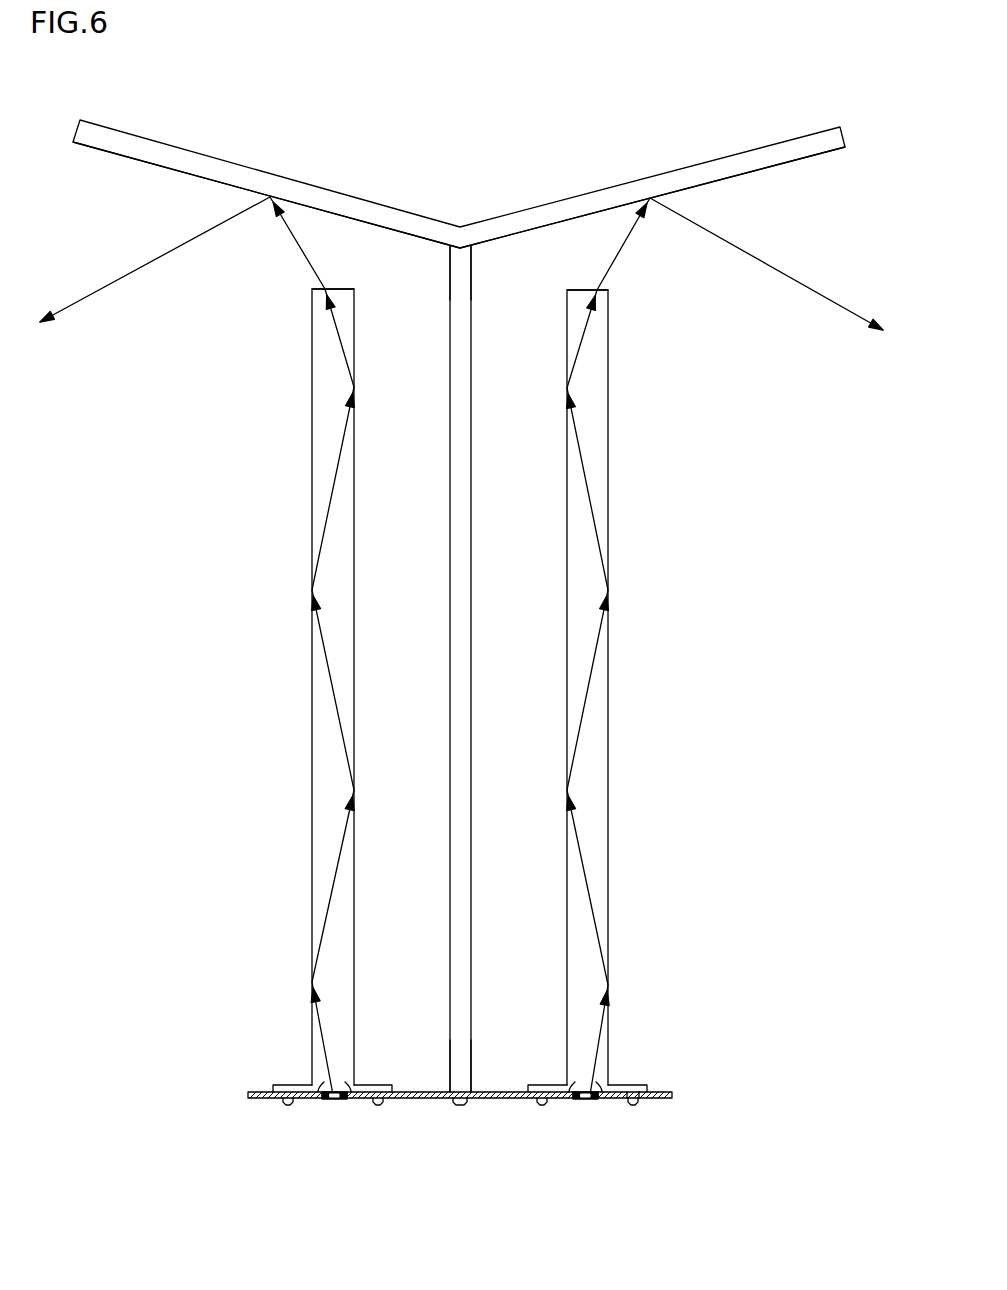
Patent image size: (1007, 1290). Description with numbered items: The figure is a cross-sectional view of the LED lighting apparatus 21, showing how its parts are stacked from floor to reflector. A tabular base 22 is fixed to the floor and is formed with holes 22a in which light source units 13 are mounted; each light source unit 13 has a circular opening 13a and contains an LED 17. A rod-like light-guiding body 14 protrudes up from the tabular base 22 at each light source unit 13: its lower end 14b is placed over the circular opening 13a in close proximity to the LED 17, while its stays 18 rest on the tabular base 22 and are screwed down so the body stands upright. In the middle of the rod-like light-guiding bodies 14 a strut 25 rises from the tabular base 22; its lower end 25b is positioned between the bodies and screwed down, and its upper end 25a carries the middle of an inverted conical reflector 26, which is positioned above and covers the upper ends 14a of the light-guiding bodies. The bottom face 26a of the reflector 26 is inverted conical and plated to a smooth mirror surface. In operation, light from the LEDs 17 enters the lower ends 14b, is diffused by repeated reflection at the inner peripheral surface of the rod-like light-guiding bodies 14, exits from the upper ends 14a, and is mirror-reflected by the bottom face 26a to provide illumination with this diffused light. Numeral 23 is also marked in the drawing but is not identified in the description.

The LED lighting apparatus 21 is at (378, 69).
The inverted conical reflector 26 is at (688, 165).
The bottom face 26a is at (736, 180).
The strut 25 is at (472, 606).
The upper end of the strut 25a is at (472, 285).
The lower end of the strut 25b is at (472, 1080).
The rod-like light-guiding body 14 is at (312, 507).
The upper end of the rod-like light-guiding body 14a is at (355, 283).
The lower end of the rod-like light-guiding body 14b is at (347, 1085).
The stay 18 is at (273, 1086).
The tabular base 22 is at (672, 1094).
The hole 22a is at (350, 1101).
The engaging hole 23 is at (632, 1103).
The light source unit 13 is at (320, 1099).
The circular opening 13a is at (318, 1088).
The LED 17 is at (330, 1100).